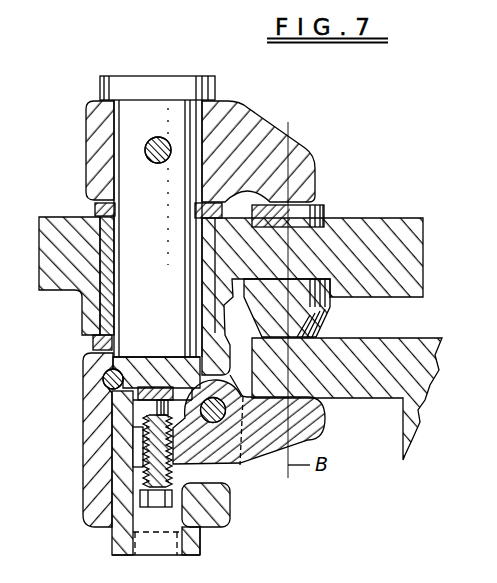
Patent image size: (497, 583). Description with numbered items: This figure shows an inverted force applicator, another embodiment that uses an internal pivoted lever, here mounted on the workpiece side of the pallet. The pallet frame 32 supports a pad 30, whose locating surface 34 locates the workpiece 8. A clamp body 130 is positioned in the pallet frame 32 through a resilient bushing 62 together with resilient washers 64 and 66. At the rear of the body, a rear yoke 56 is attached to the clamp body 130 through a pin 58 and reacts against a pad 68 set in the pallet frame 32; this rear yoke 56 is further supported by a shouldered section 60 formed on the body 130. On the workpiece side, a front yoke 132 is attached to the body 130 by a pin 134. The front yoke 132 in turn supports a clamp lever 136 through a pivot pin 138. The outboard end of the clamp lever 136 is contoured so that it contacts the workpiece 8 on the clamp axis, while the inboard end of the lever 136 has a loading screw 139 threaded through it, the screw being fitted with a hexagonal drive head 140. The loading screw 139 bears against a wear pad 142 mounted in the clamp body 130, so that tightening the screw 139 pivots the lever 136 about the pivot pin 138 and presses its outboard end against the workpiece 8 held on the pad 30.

The workpiece 8 is at (423, 422).
The pad 30 is at (333, 308).
The pallet frame 32 is at (387, 218).
The locating surface 34 is at (328, 328).
The rear yoke 56 is at (86, 118).
The pin 58 is at (145, 152).
The shouldered section 60 is at (216, 86).
The resilient bushing 62 is at (106, 312).
The resilient washer 64 is at (93, 342).
The resilient washer 66 is at (95, 210).
The pad 68 is at (324, 208).
The clamp body 130 is at (157, 228).
The front yoke 132 is at (83, 512).
The pin 134 is at (103, 382).
The clamp lever 136 is at (326, 428).
The pivot pin 138 is at (221, 420).
The loading screw 139 is at (155, 450).
The hexagonal drive head 140 is at (157, 500).
The wear pad 142 is at (138, 400).